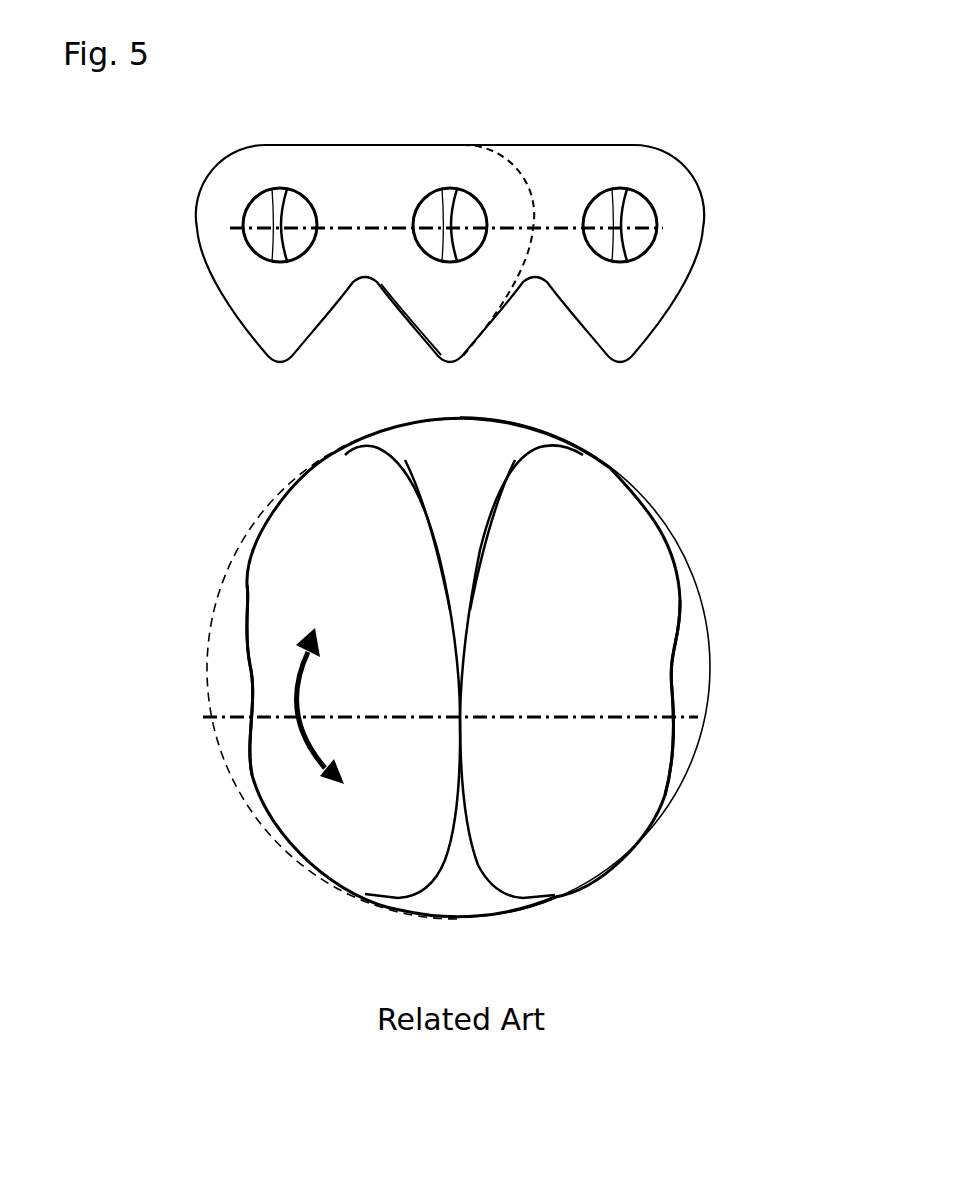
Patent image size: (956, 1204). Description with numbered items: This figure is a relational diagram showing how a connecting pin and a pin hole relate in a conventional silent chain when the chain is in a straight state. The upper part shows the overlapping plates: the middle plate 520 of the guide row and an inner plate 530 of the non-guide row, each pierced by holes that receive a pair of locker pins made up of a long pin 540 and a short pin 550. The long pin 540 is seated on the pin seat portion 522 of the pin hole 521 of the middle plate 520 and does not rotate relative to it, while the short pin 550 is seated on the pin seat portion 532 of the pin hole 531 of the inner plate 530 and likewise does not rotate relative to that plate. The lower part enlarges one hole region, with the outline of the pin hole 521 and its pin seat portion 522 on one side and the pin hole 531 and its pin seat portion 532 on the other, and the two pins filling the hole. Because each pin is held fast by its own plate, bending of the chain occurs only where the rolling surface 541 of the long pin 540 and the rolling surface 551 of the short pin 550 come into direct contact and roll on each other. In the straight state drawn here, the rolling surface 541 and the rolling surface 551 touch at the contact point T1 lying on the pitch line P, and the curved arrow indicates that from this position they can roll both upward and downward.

The middle plate 520 is at (283, 163).
The inner plate 530 is at (648, 168).
The long pin 540 is at (260, 213).
The short pin 550 is at (297, 240).
The pin hole 521 is at (228, 607).
The pin seat portion 522 is at (650, 672).
The pin hole 531 is at (375, 440).
The pin seat portion 532 is at (265, 667).
The rolling surface 541 is at (470, 533).
The rolling surface 551 is at (443, 523).
The pitch line P is at (360, 226).
The contact point T1 is at (457, 719).